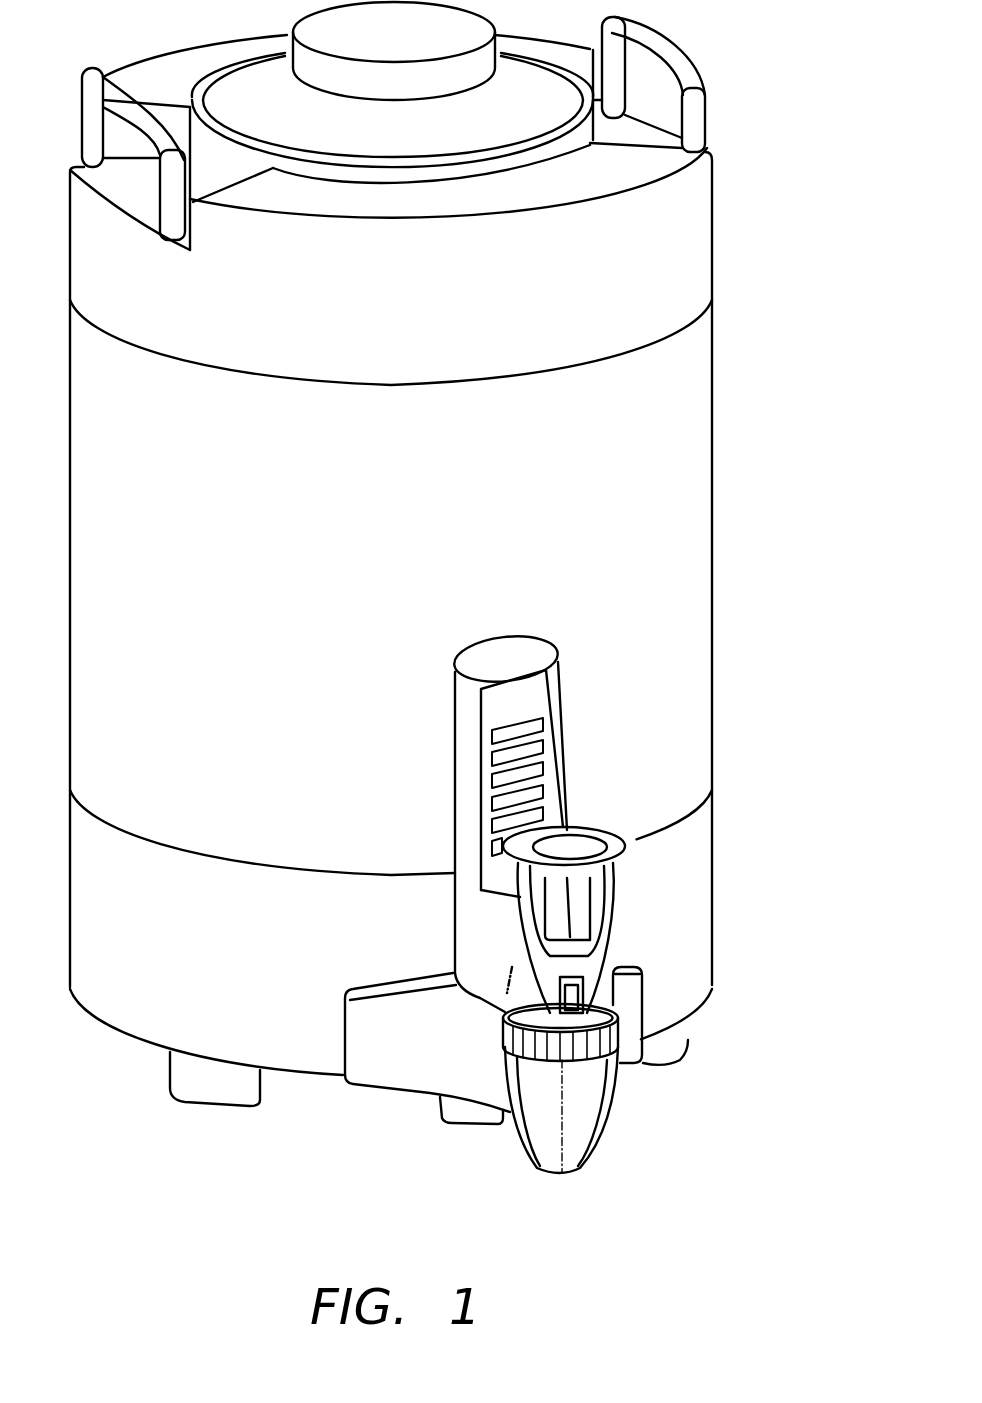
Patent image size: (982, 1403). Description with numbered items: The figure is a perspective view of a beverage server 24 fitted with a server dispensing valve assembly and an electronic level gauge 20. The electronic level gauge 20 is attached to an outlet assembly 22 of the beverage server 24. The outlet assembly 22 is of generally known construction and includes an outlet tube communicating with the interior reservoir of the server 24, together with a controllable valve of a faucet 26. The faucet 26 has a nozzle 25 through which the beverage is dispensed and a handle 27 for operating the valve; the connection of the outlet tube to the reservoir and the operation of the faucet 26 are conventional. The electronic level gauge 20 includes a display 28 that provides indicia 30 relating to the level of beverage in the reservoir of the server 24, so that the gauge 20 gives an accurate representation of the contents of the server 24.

The electronic level gauge 20 is at (442, 835).
The outlet assembly 22 is at (413, 1132).
The beverage server 24 is at (722, 413).
The nozzle 25 is at (583, 1135).
The faucet 26 is at (631, 1100).
The handle 27 is at (615, 912).
The display 28 is at (462, 763).
The indicia 30 is at (548, 786).